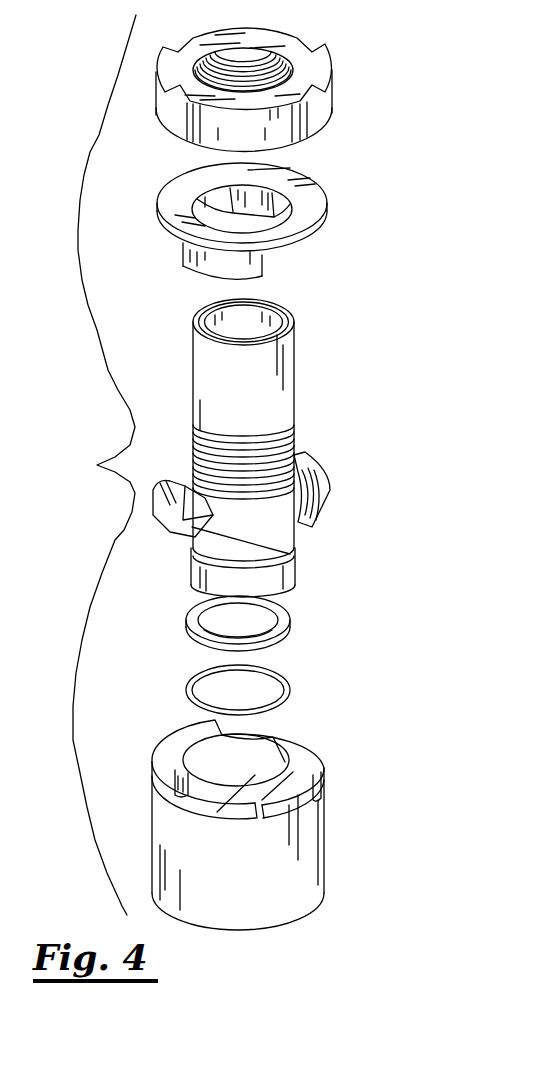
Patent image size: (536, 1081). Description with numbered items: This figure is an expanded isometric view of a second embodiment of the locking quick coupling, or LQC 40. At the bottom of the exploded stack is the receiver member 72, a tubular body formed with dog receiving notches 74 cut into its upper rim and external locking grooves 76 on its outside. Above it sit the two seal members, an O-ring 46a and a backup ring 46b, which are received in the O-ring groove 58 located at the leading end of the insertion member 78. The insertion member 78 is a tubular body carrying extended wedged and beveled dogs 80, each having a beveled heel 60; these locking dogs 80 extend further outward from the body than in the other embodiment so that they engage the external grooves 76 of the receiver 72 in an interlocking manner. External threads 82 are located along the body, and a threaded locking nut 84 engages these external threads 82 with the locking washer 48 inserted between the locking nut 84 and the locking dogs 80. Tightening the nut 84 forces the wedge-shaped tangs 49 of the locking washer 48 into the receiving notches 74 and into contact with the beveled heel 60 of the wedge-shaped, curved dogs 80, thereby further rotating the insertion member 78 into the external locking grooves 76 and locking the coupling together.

The LQC 40 is at (342, 463).
The O-ring 46a is at (290, 690).
The backup ring 46b is at (292, 622).
The locking washer 48 is at (308, 204).
The tangs 49 is at (197, 272).
The O-ring groove 58 is at (190, 562).
The beveled heel 60 is at (291, 553).
The receiver member 72 is at (300, 873).
The dog receiving notches 74 is at (270, 745).
The external locking grooves 76 is at (160, 790).
The insertion member 78 is at (200, 378).
The dogs 80 is at (330, 500).
The external threads 82 is at (291, 440).
The locking nut 84 is at (312, 64).